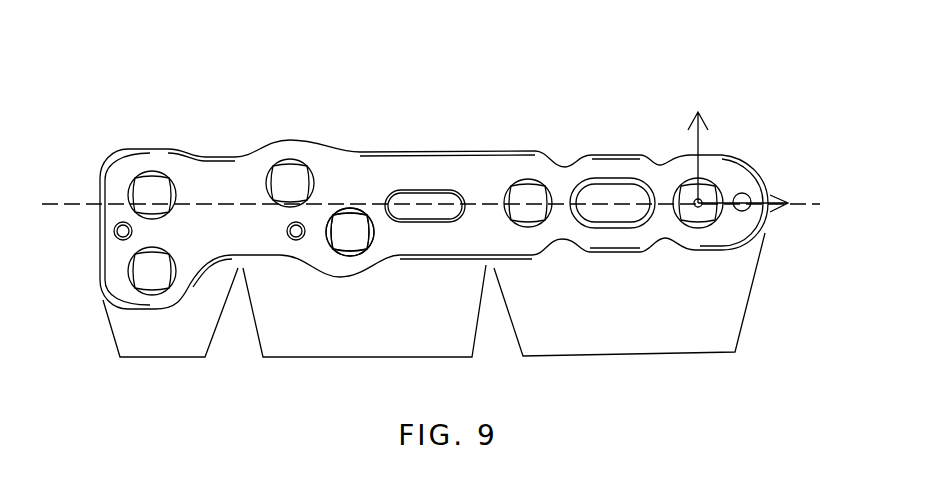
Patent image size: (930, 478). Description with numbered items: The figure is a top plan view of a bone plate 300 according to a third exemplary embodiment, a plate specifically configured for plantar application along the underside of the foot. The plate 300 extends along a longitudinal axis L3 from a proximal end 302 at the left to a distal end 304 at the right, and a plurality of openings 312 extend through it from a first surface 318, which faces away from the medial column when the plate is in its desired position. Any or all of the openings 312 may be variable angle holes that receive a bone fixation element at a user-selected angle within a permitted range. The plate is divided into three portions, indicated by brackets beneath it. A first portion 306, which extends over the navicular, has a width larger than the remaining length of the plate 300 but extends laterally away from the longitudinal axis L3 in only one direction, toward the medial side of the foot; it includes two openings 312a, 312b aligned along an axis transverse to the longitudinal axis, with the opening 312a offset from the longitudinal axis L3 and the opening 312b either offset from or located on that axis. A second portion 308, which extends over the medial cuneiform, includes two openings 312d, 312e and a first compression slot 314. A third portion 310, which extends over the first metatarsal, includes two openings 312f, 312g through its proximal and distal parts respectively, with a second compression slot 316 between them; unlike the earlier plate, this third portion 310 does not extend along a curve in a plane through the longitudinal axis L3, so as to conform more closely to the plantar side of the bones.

The bone plate 300 is at (297, 95).
The proximal end 302 is at (99, 197).
The distal end 304 is at (768, 190).
The first portion 306 is at (170, 328).
The second portion 308 is at (364, 326).
The third portion 310 is at (629, 309).
The openings 312 is at (290, 180).
The opening 312a is at (160, 273).
The opening 312b is at (150, 190).
The opening 312d is at (351, 238).
The opening 312e is at (307, 215).
The opening 312f is at (522, 193).
The opening 312g is at (685, 185).
The first compression slot 314 is at (415, 198).
The second compression slot 316 is at (617, 190).
The first surface 318 is at (476, 172).
The longitudinal axis L3 is at (431, 190).